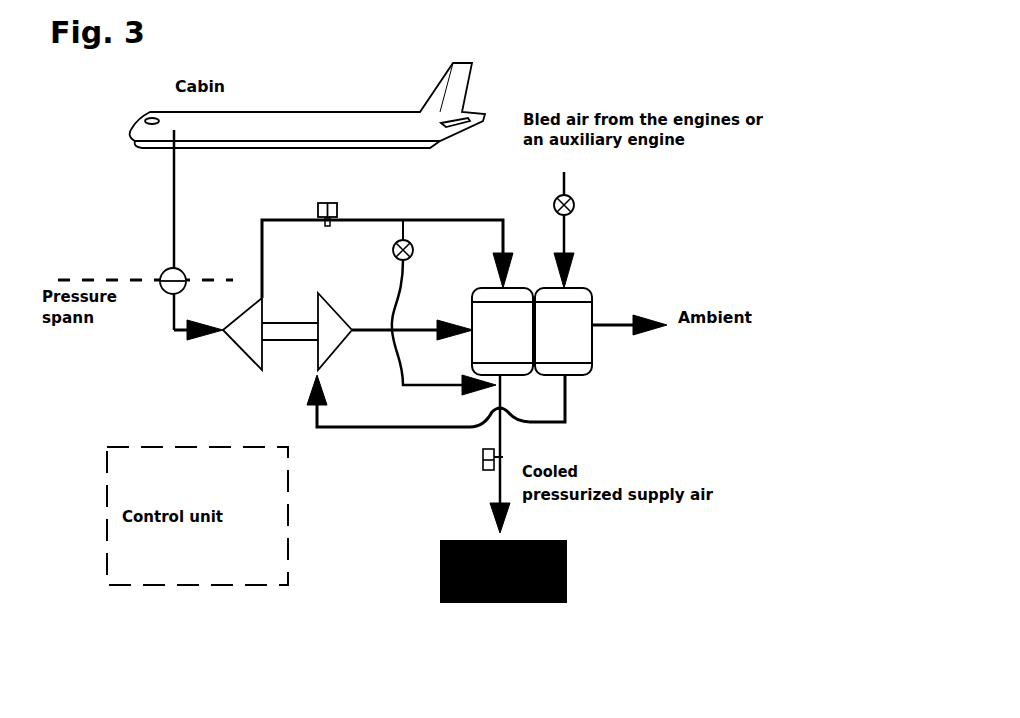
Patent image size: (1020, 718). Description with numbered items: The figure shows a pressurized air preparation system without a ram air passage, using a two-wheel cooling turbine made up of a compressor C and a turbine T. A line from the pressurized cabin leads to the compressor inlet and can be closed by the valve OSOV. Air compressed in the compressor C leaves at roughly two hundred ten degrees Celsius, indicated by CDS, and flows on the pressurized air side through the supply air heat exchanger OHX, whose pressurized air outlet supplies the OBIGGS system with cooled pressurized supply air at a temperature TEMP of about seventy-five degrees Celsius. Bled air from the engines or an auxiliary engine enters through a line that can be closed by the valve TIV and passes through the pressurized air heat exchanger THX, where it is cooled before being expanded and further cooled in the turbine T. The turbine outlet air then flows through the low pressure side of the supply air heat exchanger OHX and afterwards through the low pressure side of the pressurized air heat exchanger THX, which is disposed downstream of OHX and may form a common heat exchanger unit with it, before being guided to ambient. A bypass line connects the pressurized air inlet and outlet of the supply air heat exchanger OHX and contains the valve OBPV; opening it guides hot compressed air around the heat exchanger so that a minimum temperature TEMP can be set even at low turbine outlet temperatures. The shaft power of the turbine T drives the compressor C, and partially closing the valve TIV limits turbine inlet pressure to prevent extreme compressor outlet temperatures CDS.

The valve OSOV is at (162, 268).
The compressor C is at (242, 334).
The turbine T is at (335, 331).
The compressor outlet temperature CDS is at (332, 201).
The valve OBPV is at (405, 307).
The supply air heat exchanger OHX is at (479, 315).
The pressurized air heat exchanger THX is at (593, 334).
The valve TIV is at (587, 230).
The temperature of cooled supply air TEMP is at (441, 462).
The OBIGGS system OBIGGS is at (503, 571).